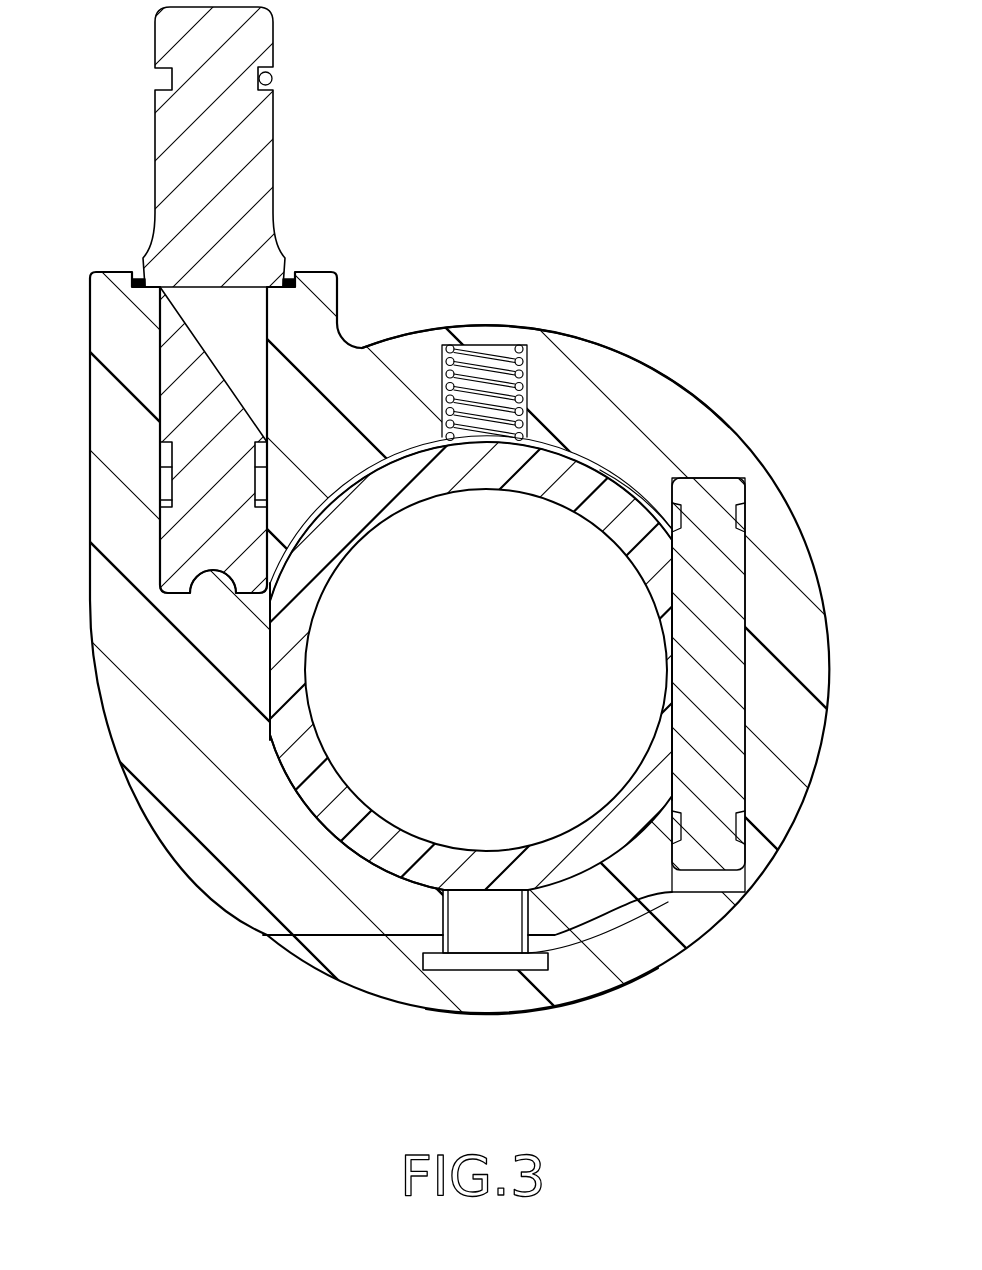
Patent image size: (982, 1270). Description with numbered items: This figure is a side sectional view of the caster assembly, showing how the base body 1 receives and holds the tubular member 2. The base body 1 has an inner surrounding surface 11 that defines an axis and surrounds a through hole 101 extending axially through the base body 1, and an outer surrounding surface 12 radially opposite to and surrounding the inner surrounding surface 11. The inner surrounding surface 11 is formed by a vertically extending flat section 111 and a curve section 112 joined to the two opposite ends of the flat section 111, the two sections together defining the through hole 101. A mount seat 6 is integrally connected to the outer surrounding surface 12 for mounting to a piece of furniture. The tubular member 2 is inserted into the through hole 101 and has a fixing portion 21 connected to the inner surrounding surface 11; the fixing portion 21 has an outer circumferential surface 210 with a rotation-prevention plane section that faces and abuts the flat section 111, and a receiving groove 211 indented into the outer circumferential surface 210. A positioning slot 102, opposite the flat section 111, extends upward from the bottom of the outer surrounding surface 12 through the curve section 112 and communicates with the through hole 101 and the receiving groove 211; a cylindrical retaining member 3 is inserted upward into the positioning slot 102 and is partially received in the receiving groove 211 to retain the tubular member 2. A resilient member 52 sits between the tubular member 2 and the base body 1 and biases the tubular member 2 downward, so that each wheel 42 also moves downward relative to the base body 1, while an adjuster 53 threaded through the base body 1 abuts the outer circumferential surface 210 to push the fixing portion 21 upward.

The base body 1 is at (362, 380).
The tubular member 2 is at (350, 855).
The retaining member 3 is at (703, 662).
The mount seat 6 is at (200, 385).
The inner surrounding surface 11 is at (287, 527).
The outer surrounding surface 12 is at (612, 347).
The fixing portion 21 is at (428, 868).
The wheel 42 is at (613, 967).
The resilient member 52 is at (480, 375).
The adjuster 53 is at (512, 958).
The through hole 101 is at (295, 815).
The positioning slot 102 is at (720, 472).
The flat section 111 is at (310, 635).
The curve section 112 is at (677, 450).
The outer circumferential surface 210 is at (305, 740).
The receiving groove 211 is at (668, 795).